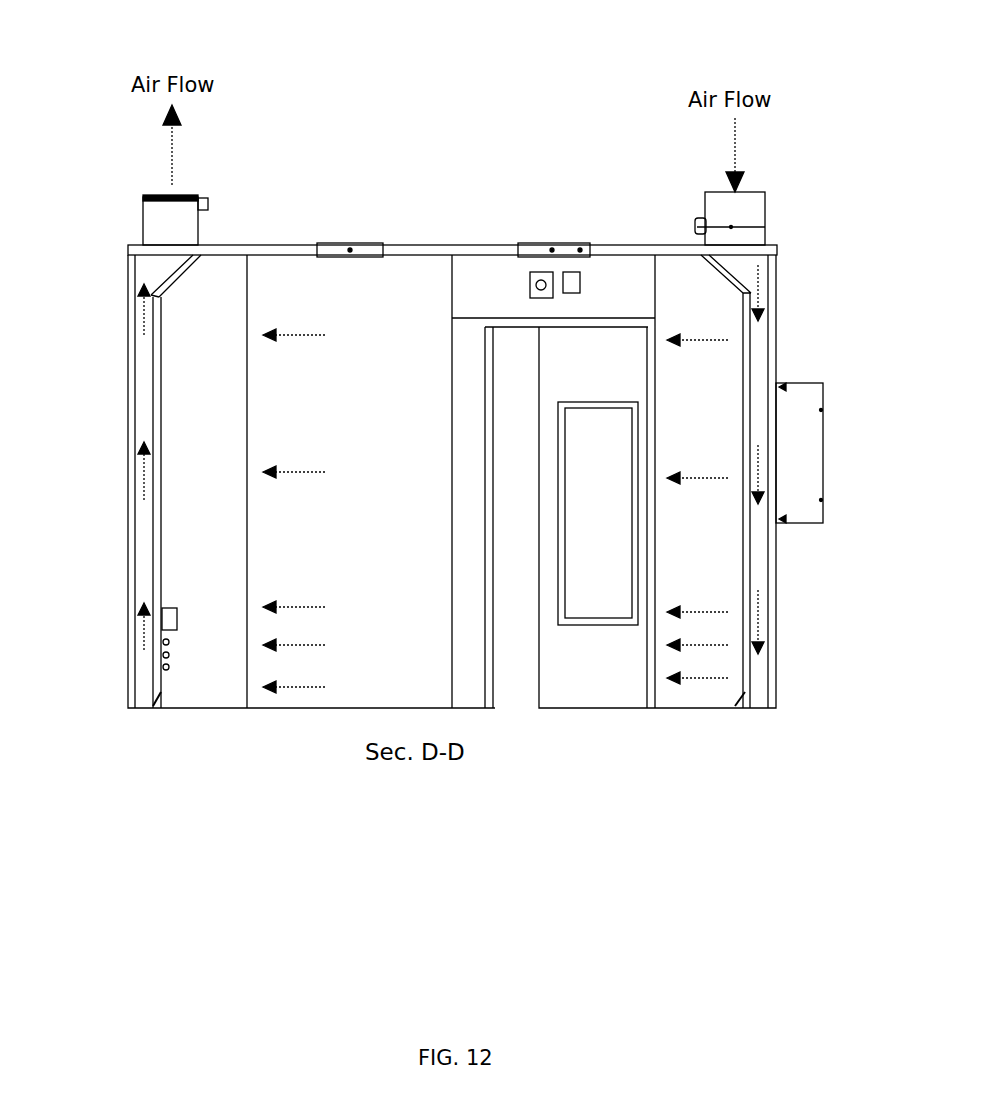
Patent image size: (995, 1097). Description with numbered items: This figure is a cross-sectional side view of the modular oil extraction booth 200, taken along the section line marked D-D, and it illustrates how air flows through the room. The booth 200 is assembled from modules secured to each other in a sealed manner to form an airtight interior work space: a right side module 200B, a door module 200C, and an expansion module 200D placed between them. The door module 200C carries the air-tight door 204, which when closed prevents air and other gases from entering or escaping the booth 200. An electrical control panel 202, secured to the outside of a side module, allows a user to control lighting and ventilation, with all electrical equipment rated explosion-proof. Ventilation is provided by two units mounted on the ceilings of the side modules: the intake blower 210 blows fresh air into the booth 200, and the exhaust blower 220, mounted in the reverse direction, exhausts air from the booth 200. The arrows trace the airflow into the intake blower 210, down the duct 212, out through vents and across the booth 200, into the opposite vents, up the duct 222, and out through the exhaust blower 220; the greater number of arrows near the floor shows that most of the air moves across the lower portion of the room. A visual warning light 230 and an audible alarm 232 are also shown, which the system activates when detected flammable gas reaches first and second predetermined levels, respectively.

The oil extraction booth 200 is at (324, 118).
The right side module 200B is at (187, 708).
The door module 200C is at (613, 245).
The expansion module 200D is at (312, 708).
The electrical control panel 202 is at (823, 385).
The air-tight door 204 is at (558, 708).
The intake blower 210 is at (758, 202).
The duct 212 is at (762, 277).
The exhaust blower 220 is at (143, 200).
The duct 222 is at (152, 267).
The visual warning light 230 is at (580, 283).
The audible alarm 232 is at (531, 282).